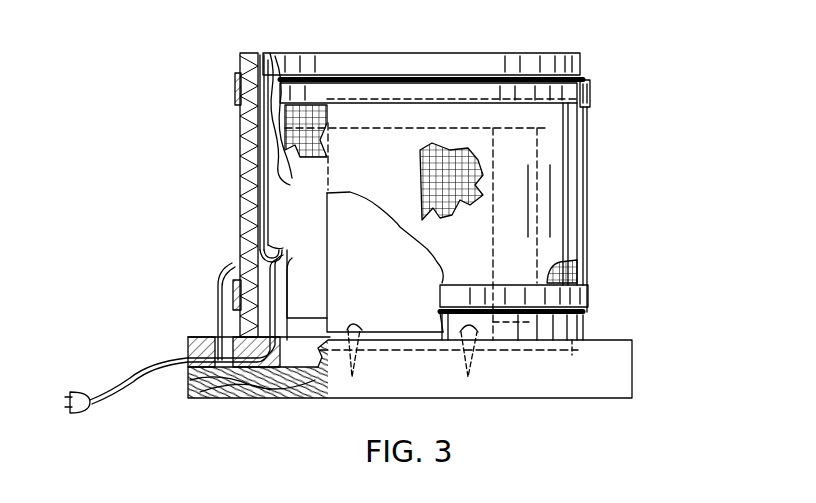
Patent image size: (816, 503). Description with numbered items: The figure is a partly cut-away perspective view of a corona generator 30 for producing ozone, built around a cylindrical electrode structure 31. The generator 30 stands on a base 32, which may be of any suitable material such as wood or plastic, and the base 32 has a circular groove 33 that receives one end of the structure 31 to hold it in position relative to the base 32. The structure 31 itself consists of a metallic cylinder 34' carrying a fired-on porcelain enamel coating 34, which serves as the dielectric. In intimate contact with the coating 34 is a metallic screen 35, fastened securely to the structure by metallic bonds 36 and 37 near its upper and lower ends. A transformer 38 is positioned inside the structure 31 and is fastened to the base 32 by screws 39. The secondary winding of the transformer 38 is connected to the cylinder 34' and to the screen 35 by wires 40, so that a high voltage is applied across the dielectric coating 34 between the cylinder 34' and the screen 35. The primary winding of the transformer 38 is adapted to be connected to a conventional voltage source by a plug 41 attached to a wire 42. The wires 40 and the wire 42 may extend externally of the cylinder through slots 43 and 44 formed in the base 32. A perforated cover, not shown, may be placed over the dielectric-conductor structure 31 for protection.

The corona generator 30 is at (662, 147).
The cylindrical electrode structure 31 is at (588, 210).
The base 32 is at (623, 338).
The circular groove 33 is at (572, 355).
The porcelain enamel coating 34 is at (423, 52).
The metallic cylinder 34' is at (271, 101).
The metallic screen 35 is at (585, 183).
The metallic bond 36 is at (563, 113).
The metallic bond 37 is at (530, 283).
The transformer 38 is at (397, 287).
The screws 39 is at (463, 360).
The wires 40 is at (277, 256).
The plug 41 is at (83, 385).
The wire 42 is at (142, 372).
The slot 43 is at (208, 337).
The slot 44 is at (253, 383).